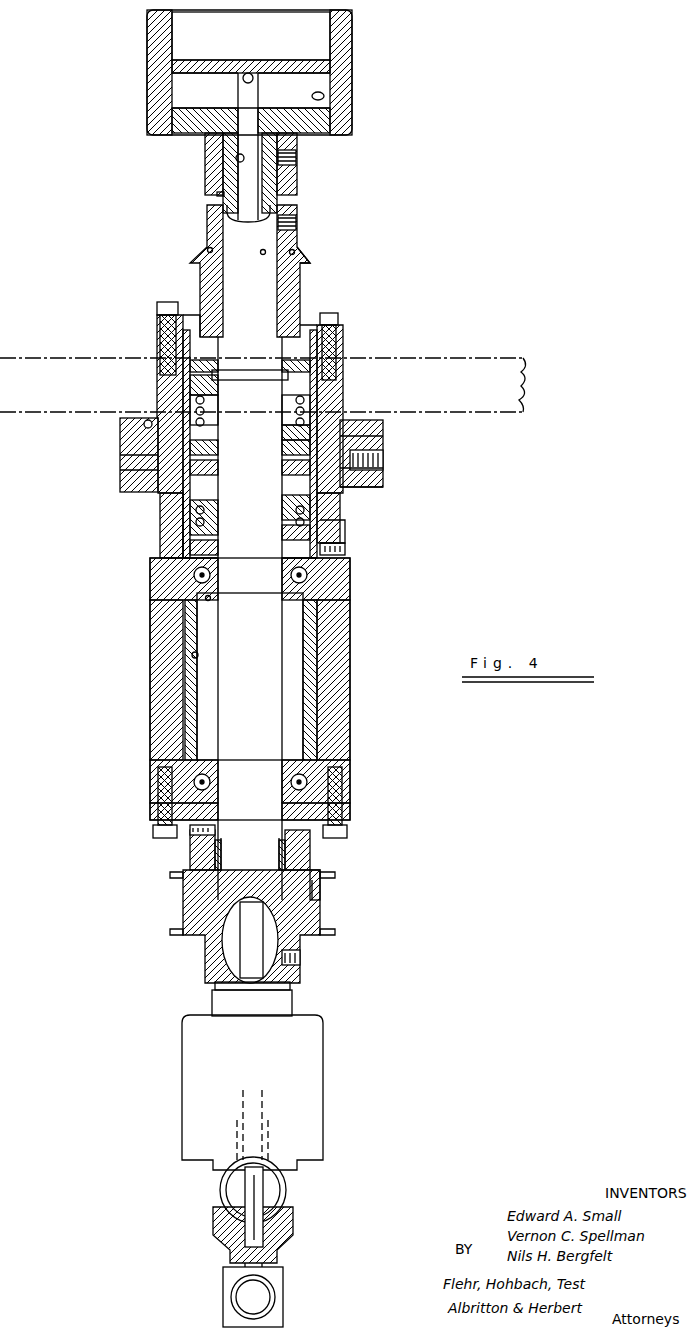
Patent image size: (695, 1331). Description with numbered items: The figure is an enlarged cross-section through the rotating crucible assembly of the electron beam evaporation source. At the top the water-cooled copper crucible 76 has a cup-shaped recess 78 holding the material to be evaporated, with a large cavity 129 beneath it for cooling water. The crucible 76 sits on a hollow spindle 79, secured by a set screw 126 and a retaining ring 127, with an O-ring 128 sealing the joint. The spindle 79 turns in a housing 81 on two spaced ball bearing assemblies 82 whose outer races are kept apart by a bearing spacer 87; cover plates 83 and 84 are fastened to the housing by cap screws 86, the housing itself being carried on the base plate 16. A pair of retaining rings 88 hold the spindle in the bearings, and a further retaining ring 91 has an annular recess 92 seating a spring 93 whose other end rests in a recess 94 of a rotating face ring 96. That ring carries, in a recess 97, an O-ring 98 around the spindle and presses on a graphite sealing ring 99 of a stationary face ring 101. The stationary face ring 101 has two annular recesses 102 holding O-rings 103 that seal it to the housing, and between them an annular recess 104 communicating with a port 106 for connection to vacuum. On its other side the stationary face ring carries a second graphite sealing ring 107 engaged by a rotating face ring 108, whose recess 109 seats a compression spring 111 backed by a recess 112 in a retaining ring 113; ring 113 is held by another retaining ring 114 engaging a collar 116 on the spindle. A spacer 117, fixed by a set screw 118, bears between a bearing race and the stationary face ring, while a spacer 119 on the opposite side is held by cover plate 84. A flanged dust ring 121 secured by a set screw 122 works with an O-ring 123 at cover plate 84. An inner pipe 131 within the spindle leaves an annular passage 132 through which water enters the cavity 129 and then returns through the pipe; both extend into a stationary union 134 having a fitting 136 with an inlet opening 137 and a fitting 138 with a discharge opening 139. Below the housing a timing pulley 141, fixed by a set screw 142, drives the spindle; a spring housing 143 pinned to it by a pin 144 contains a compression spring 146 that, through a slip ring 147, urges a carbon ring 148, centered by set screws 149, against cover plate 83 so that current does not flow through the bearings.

The base plate 16 is at (490, 352).
The crucible 76 is at (352, 40).
The cup-shaped recess 78 is at (328, 22).
The hollow spindle 79 is at (258, 488).
The housing 81 is at (150, 690).
The ball bearing assemblies 82 is at (320, 583).
The cover plate 83 is at (350, 815).
The cover plate 84 is at (300, 295).
The cap screws 86 is at (160, 305).
The bearing spacer 87 is at (192, 655).
The retaining rings 88 is at (225, 548).
The retaining ring 91 is at (180, 556).
The annular recess 92 is at (192, 540).
The spring 93 is at (165, 520).
The annular recess 94 is at (185, 515).
The rotating face ring 96 is at (330, 510).
The annular recess 97 is at (218, 520).
The O-ring 98 is at (285, 533).
The graphite sealing ring 99 is at (383, 482).
The stationary face ring 101 is at (220, 455).
The annular recesses 102 is at (383, 440).
The O-rings 103 is at (150, 477).
The annular recess 104 is at (220, 470).
The port 106 is at (383, 458).
The graphite sealing ring 107 is at (345, 430).
The rotating face ring 108 is at (310, 428).
The annular recess 109 is at (160, 408).
The compression spring 111 is at (305, 405).
The annular recess 112 is at (188, 390).
The retaining ring 113 is at (340, 365).
The retaining ring 114 is at (185, 350).
The collar 116 is at (244, 374).
The spacer 117 is at (345, 525).
The set screw 118 is at (350, 548).
The spacer 119 is at (340, 335).
The flanged dust ring 121 is at (298, 255).
The set screw 122 is at (297, 225).
The O-ring 123 is at (265, 255).
The set screw 126 is at (298, 155).
The retaining ring 127 is at (217, 194).
The O-ring 128 is at (218, 122).
The cavity 129 is at (322, 96).
The inner pipe 131 is at (258, 172).
The annular passage 132 is at (236, 160).
The stationary union 134 is at (320, 1085).
The fitting 136 is at (287, 1195).
The opening 137 is at (230, 1190).
The fitting 138 is at (283, 1285).
The opening 139 is at (240, 1298).
The timing pulley 141 is at (322, 905).
The set screw 142 is at (300, 957).
The spring housing 143 is at (305, 861).
The pin 144 is at (322, 892).
The compression spring 146 is at (195, 863).
The slip ring 147 is at (278, 852).
The carbon ring 148 is at (277, 850).
The set screws 149 is at (190, 852).